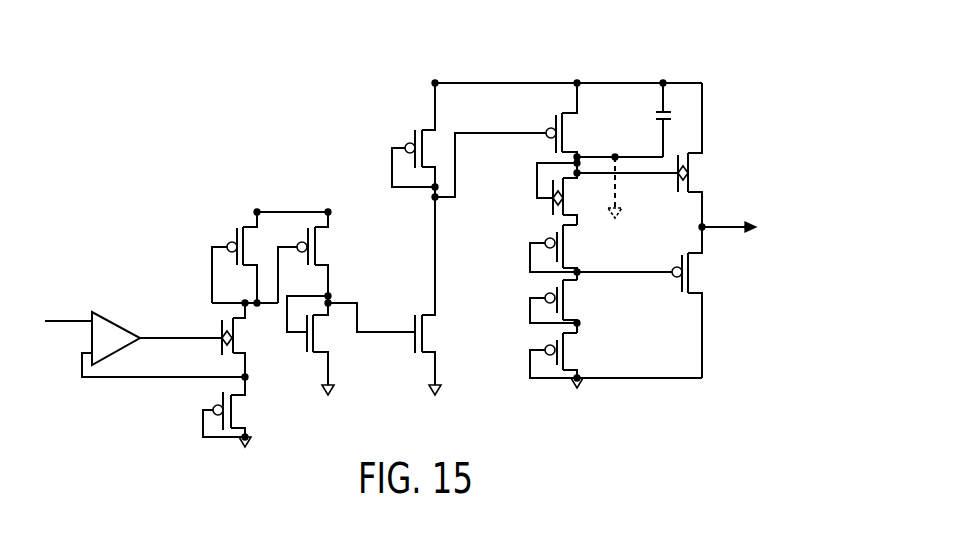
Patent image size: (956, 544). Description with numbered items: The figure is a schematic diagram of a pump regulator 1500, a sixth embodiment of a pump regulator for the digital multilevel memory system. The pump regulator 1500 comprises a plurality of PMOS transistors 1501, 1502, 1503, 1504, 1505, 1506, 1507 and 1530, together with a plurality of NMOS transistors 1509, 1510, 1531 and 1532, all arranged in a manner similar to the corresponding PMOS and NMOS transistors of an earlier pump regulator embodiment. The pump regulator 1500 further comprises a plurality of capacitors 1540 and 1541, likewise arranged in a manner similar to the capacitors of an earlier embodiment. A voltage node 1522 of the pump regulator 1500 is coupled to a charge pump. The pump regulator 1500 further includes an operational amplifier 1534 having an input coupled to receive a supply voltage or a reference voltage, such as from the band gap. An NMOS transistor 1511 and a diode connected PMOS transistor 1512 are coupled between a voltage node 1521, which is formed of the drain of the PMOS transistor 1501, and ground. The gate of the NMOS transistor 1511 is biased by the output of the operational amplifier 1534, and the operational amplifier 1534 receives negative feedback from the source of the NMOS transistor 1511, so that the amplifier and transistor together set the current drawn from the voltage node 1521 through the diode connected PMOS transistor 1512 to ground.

The pump regulator 1500 is at (262, 74).
The PMOS transistor 1501 is at (252, 248).
The PMOS transistor 1502 is at (318, 248).
The PMOS transistor 1503 is at (413, 140).
The PMOS transistor 1504 is at (553, 120).
The PMOS transistor 1505 is at (568, 243).
The PMOS transistor 1506 is at (568, 300).
The PMOS transistor 1507 is at (570, 350).
The NMOS transistor 1509 is at (323, 333).
The NMOS transistor 1510 is at (430, 332).
The NMOS transistor 1511 is at (218, 328).
The diode connected PMOS transistor 1512 is at (237, 413).
The voltage node 1521 is at (257, 305).
The voltage node 1522 is at (470, 83).
The PMOS transistor 1530 is at (698, 277).
The NMOS transistor 1531 is at (697, 173).
The NMOS transistor 1532 is at (553, 207).
The operational amplifier 1534 is at (112, 337).
The capacitor 1540 is at (655, 118).
The capacitor 1541 is at (620, 182).